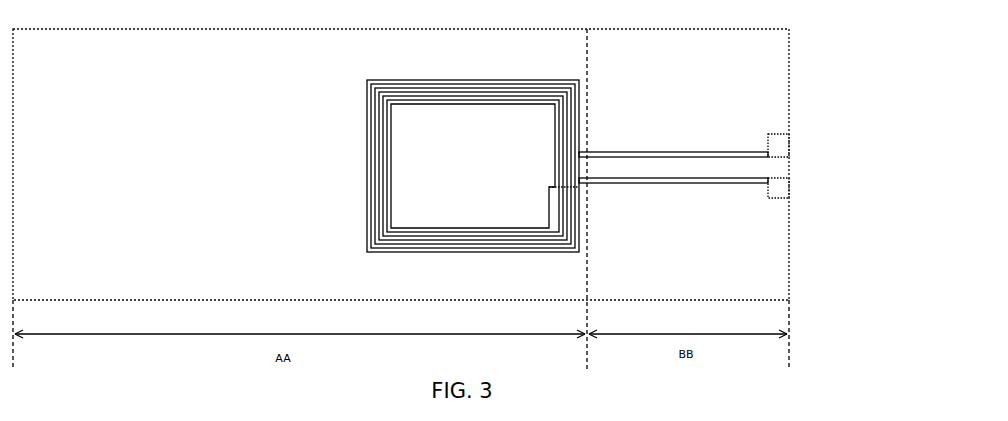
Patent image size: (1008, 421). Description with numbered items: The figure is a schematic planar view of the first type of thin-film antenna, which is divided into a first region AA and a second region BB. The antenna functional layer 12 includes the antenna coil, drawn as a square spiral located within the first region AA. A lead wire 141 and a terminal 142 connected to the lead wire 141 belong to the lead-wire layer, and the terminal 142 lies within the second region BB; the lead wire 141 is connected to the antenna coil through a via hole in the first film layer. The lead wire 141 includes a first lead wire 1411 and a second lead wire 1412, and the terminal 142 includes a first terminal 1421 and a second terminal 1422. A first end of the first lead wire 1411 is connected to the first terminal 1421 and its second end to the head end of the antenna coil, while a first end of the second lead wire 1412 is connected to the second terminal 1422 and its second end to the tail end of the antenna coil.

The antenna functional layer 12 is at (560, 103).
The lead wire 141 is at (746, 211).
The first lead wire 1411 is at (720, 182).
The second lead wire 1412 is at (657, 153).
The terminal 142 is at (841, 166).
The first terminal 1421 is at (783, 192).
The second terminal 1422 is at (778, 149).